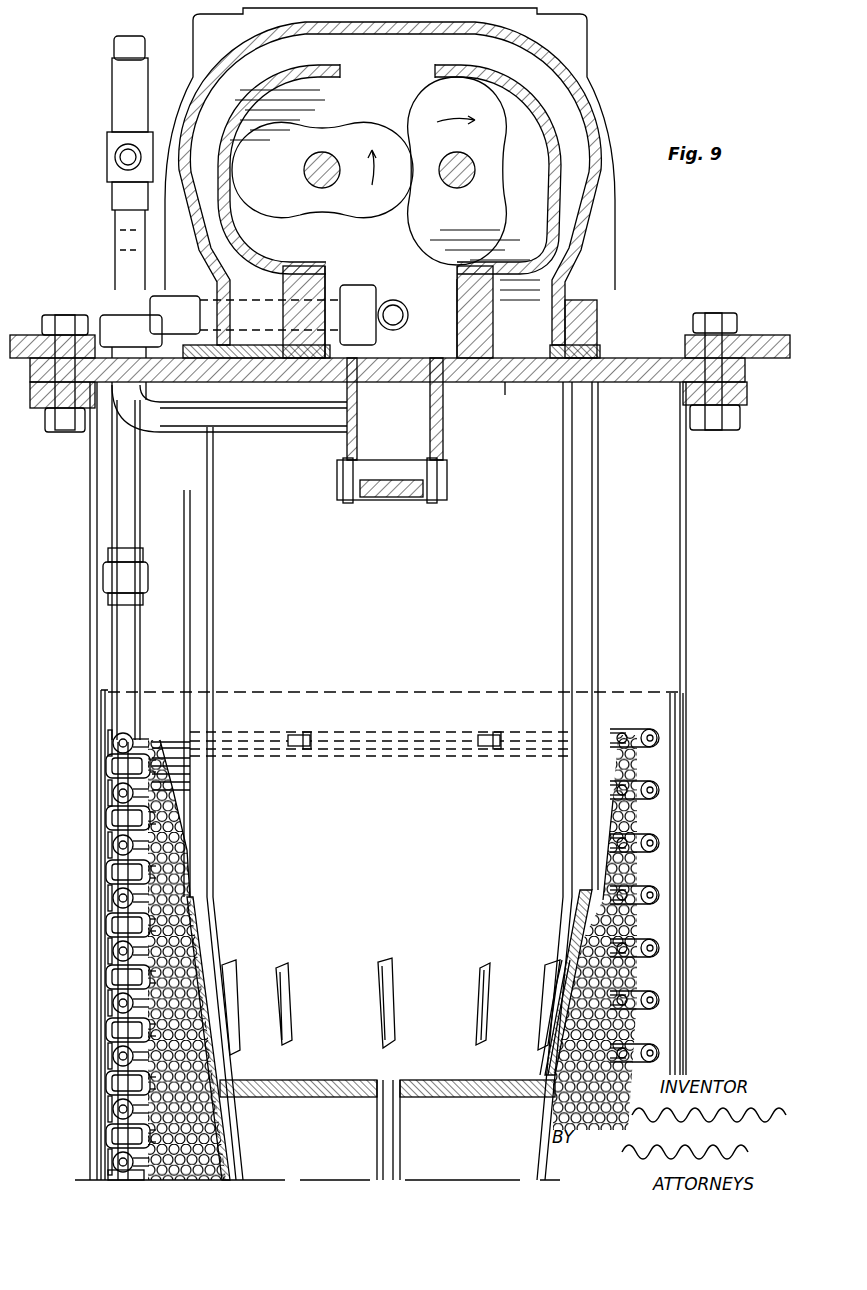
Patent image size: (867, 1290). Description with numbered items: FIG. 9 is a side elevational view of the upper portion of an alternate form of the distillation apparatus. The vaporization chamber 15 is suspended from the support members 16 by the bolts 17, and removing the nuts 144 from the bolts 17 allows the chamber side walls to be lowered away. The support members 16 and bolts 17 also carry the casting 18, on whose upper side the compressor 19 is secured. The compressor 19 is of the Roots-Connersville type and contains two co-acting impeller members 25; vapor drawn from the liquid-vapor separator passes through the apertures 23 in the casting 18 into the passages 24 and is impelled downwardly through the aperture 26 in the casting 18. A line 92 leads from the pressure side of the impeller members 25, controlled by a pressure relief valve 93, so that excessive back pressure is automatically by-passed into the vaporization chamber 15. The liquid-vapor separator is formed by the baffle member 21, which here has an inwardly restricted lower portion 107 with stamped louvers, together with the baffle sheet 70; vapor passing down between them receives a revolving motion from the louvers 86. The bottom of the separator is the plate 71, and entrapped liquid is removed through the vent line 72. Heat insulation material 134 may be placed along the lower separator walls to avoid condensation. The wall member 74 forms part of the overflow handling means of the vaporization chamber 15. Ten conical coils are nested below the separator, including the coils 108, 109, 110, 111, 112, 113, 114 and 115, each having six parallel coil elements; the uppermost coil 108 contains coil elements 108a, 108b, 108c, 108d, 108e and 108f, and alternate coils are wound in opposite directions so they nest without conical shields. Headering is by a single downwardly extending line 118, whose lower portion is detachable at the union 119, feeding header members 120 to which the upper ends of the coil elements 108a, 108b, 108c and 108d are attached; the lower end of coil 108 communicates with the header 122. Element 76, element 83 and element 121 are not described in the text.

The vaporization chamber 15 is at (688, 553).
The support members 16 is at (758, 340).
The bolts 17 is at (700, 348).
The casting 18 is at (618, 362).
The compressor 19 is at (618, 112).
The baffle member 21 is at (583, 478).
The apertures 23 is at (503, 372).
The passages 24 is at (600, 200).
The impeller members 25 is at (369, 171).
The aperture 26 is at (437, 370).
The baffle sheet 70 is at (598, 578).
The plate 71 is at (445, 1080).
The vent line 72 is at (397, 1145).
The wall member 74 is at (676, 755).
The outer screen 76 is at (686, 818).
The inner wall 83 is at (573, 541).
The louvers 86 is at (392, 984).
The line 92 is at (262, 318).
The pressure relief valve 93 is at (120, 100).
The inwardly restricted lower portion 107 is at (565, 934).
The conical coil 108 is at (112, 792).
The coil element 108a is at (633, 738).
The coil element 108b is at (165, 768).
The coil element 108c is at (165, 775).
The coil element 108d is at (165, 783).
The coil element 108e is at (165, 791).
The coil element 108f is at (165, 799).
The conical coil 109 is at (108, 822).
The conical coil 110 is at (108, 874).
The conical coil 111 is at (108, 927).
The conical coil 112 is at (108, 978).
The conical coil 113 is at (108, 1030).
The conical coil 114 is at (108, 1084).
The conical coil 115 is at (108, 1137).
The downwardly extending line 118 is at (264, 430).
The detachable union 119 is at (108, 572).
The header members 120 is at (400, 733).
The valve 121 is at (528, 742).
The header 122 is at (108, 758).
The heat insulation material 134 is at (195, 900).
The nuts 144 is at (738, 420).